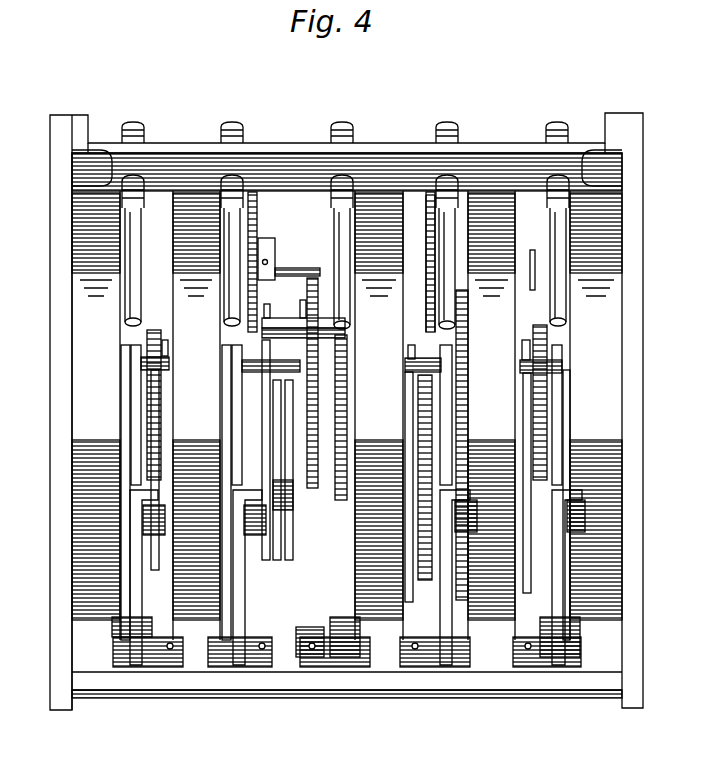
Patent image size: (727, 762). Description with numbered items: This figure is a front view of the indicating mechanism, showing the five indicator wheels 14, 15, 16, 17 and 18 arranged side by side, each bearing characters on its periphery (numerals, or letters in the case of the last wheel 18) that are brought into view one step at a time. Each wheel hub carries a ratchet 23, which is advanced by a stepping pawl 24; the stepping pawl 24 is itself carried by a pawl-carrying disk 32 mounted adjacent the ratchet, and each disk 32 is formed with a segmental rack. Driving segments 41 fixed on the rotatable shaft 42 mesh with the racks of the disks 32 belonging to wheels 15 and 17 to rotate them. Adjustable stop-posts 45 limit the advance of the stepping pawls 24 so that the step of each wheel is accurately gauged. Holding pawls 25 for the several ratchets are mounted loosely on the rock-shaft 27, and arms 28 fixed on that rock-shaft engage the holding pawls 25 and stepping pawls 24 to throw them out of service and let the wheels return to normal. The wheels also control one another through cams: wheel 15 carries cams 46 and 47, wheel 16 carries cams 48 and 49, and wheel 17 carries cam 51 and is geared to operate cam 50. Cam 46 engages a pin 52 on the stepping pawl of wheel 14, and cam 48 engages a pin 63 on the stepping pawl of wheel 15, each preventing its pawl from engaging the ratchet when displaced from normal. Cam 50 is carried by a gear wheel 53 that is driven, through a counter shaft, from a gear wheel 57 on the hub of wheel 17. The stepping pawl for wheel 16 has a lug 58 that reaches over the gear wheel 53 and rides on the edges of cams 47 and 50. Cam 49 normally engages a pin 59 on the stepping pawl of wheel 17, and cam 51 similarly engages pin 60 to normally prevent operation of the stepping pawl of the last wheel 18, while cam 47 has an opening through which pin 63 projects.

The indicator wheel 14 is at (96, 415).
The indicator wheel 15 is at (196, 415).
The indicator wheel 16 is at (379, 415).
The indicator wheel 17 is at (491, 415).
The indicator wheel 18 is at (596, 415).
The ratchet 23 is at (121, 392).
The stepping pawl 24 is at (131, 352).
The holding pawl 25 is at (130, 520).
The rock-shaft 27 is at (288, 637).
The arm 28 is at (165, 475).
The pawl-carrying disk 32 is at (154, 330).
The driving segment 41 is at (431, 195).
The rotatable shaft 42 is at (533, 250).
The adjustable stop-post 45 is at (550, 222).
The cam 46 is at (168, 348).
The cam 47 is at (266, 304).
The cam 48 is at (284, 470).
The cam 49 is at (410, 345).
The cam 50 is at (307, 312).
The cam 51 is at (526, 340).
The pin 52 is at (169, 368).
The gear wheel 53 is at (312, 282).
The gear wheel 57 is at (468, 335).
The lug 58 is at (303, 319).
The pin 59 is at (405, 371).
The pin 60 is at (520, 366).
The pin 63 is at (240, 364).